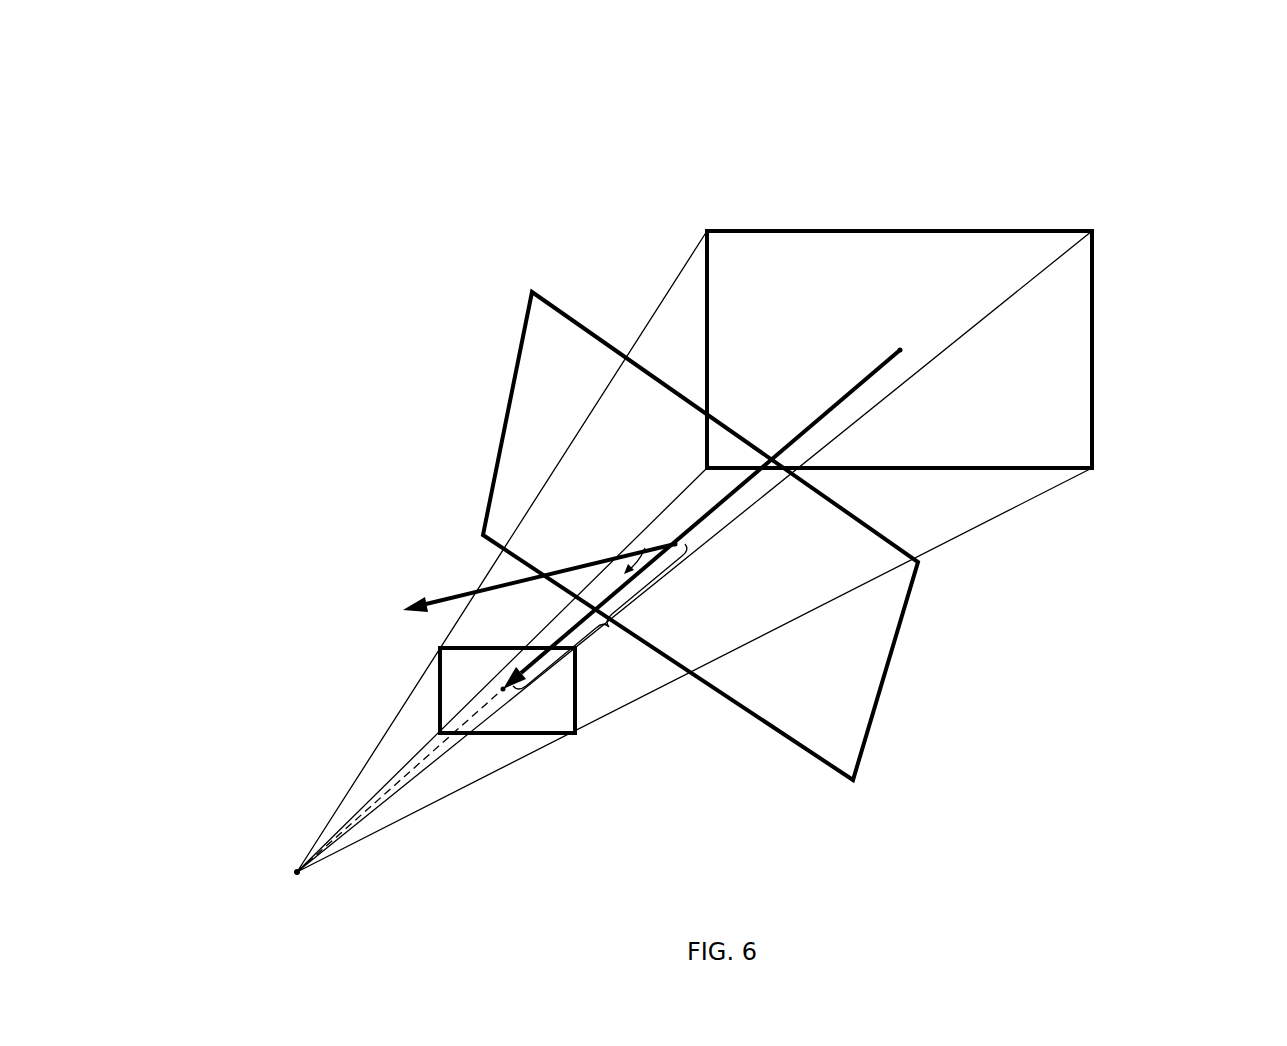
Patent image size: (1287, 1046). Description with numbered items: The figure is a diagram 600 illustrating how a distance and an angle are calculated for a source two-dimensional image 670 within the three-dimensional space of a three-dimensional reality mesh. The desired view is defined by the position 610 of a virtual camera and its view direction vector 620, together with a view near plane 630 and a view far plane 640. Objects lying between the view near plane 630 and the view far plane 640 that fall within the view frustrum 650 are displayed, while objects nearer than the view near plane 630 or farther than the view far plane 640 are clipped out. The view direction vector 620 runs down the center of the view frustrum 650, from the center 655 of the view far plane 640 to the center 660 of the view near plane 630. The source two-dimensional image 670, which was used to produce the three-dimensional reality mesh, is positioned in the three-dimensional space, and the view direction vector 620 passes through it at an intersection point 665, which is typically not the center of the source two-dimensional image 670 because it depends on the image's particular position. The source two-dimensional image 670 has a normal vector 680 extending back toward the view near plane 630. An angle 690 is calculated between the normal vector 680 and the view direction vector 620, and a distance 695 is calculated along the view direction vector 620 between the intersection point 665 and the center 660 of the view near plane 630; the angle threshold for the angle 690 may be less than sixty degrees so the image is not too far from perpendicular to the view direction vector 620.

The diagram 600 is at (1195, 82).
The position 610 is at (295, 872).
The view direction vector 620 is at (858, 385).
The view near plane 630 is at (438, 676).
The view far plane 640 is at (855, 230).
The view frustrum 650 is at (993, 310).
The center of the view far plane 655 is at (903, 348).
The center of the view near plane 660 is at (577, 787).
The intersection point 665 is at (680, 548).
The source 2D image 670 is at (890, 667).
The normal vector 680 is at (458, 597).
The angle 690 is at (645, 548).
The distance 695 is at (609, 627).